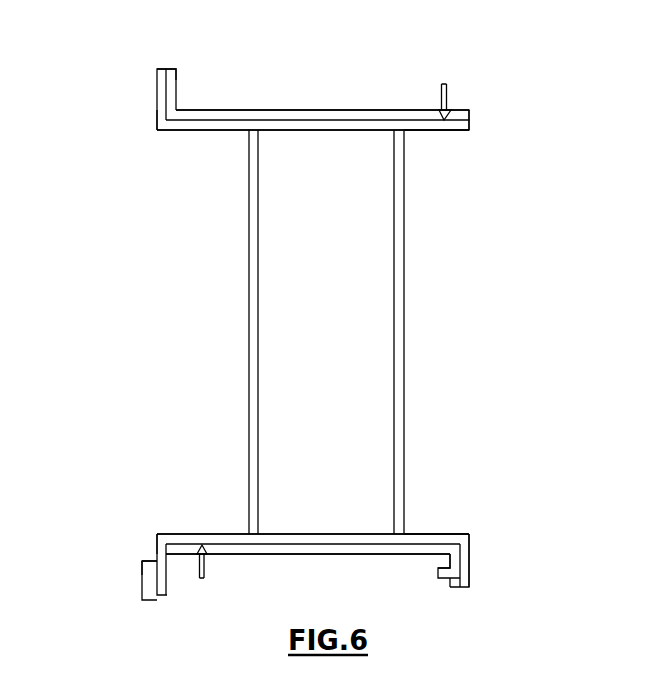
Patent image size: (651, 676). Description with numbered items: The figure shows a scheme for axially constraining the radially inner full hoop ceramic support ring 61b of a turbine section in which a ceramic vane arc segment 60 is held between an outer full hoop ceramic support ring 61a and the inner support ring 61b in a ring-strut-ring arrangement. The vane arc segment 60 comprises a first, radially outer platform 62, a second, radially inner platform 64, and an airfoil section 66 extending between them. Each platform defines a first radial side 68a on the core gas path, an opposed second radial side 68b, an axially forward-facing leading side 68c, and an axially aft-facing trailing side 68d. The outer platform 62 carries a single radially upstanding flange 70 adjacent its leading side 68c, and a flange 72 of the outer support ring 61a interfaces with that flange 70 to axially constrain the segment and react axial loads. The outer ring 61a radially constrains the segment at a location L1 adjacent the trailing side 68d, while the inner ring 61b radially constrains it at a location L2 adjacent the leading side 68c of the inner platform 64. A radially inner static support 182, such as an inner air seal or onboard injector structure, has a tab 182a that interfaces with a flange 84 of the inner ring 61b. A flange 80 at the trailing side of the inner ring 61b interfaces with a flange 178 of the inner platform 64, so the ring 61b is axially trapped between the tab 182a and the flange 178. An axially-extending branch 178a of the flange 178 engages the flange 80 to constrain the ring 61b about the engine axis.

The ceramic vane arc segment 60 is at (186, 344).
The radially outer full hoop ceramic support ring 61a is at (315, 110).
The radially inner full hoop ceramic support ring 61b is at (287, 555).
The first platform 62 is at (427, 125).
The second platform 64 is at (415, 534).
The airfoil section 66 is at (404, 268).
The first radial side 68a is at (187, 130).
The second radial side 68b is at (245, 120).
The axially forward-facing leading side 68c is at (157, 121).
The axially aft-facing trailing side 68d is at (470, 126).
The flange 70 is at (157, 87).
The flange 72 is at (177, 85).
The flange 80 is at (446, 550).
The flange 84 is at (167, 580).
The flange 178 is at (466, 552).
The axially-extending branch 178a is at (443, 580).
The radially inner static support 182 is at (137, 596).
The tab 182a is at (142, 577).
The location L1 is at (447, 95).
The location L2 is at (207, 568).